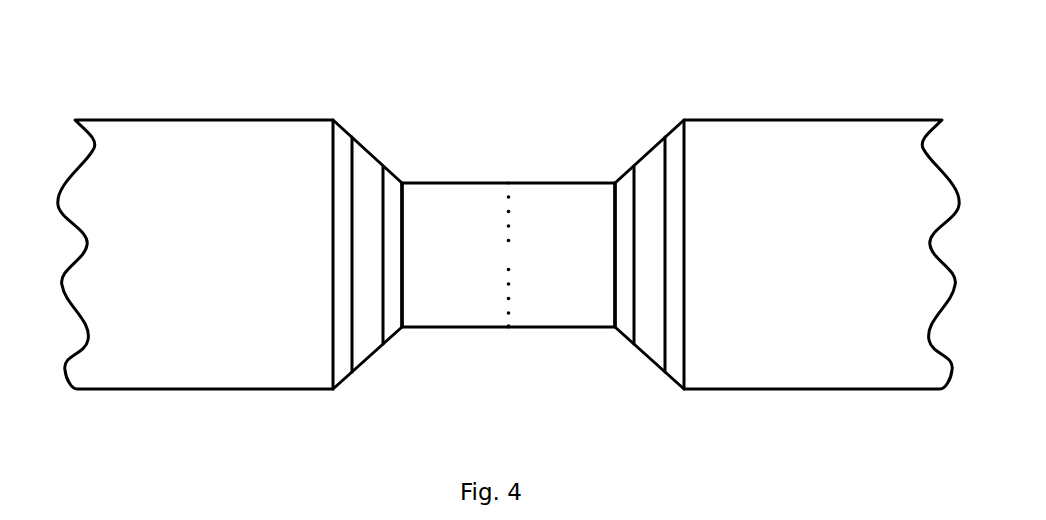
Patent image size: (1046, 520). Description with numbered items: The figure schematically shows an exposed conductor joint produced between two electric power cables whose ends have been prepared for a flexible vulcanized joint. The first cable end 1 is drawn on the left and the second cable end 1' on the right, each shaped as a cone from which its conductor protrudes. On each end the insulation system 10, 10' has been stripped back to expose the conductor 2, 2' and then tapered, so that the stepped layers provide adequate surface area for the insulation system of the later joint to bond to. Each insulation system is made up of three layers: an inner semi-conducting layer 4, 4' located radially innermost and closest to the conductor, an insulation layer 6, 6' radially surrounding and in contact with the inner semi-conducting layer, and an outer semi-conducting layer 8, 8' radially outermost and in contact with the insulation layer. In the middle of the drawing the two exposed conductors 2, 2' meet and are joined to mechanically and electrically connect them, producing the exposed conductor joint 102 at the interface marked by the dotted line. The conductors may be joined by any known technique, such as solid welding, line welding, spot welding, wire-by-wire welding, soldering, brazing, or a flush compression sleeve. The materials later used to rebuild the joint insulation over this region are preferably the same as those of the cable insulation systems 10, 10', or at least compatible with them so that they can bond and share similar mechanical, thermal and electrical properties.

The cable end 1 is at (195, 199).
The cable end 1' is at (821, 203).
The insulation system 10 is at (399, 274).
The insulation system 10' is at (619, 274).
The exposed conductor joint 102 is at (508, 255).
The conductor 2 is at (455, 276).
The conductor 2' is at (562, 276).
The inner semi-conducting layer 4 is at (428, 290).
The inner semi-conducting layer 4' is at (586, 289).
The insulation layer 6 is at (401, 296).
The insulation layer 6' is at (612, 293).
The outer semi-conducting layer 8 is at (391, 292).
The outer semi-conducting layer 8' is at (651, 292).